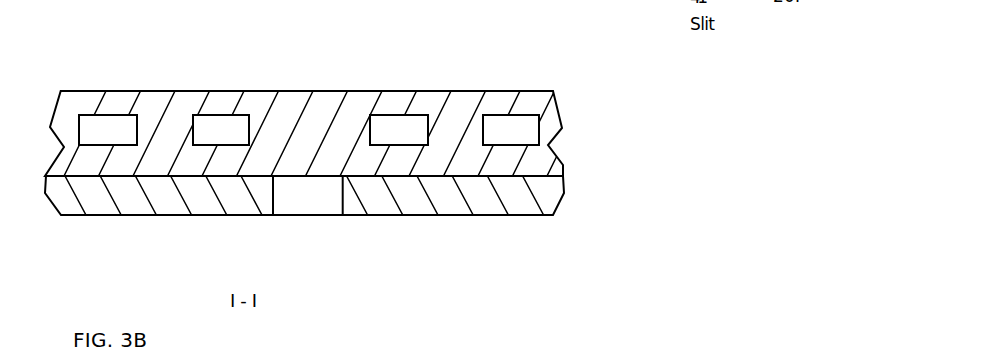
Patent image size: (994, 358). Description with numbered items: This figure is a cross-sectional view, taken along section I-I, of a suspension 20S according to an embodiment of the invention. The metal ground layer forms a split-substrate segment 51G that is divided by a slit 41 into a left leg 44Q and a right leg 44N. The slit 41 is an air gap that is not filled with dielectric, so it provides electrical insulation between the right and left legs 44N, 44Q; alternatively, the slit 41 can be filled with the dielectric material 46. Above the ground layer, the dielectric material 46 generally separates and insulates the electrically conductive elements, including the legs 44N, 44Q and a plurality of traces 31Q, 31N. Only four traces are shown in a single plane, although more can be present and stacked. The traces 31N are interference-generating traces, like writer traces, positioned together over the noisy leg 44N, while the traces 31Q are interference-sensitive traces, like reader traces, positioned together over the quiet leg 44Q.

The suspension 20S is at (87, 72).
The dielectric material 46 is at (293, 100).
The traces 31Q is at (222, 115).
The traces 31N is at (499, 115).
The slit 41 is at (307, 210).
The left leg 44Q is at (95, 208).
The right leg 44N is at (522, 203).
The split-substrate segment 51G is at (432, 231).